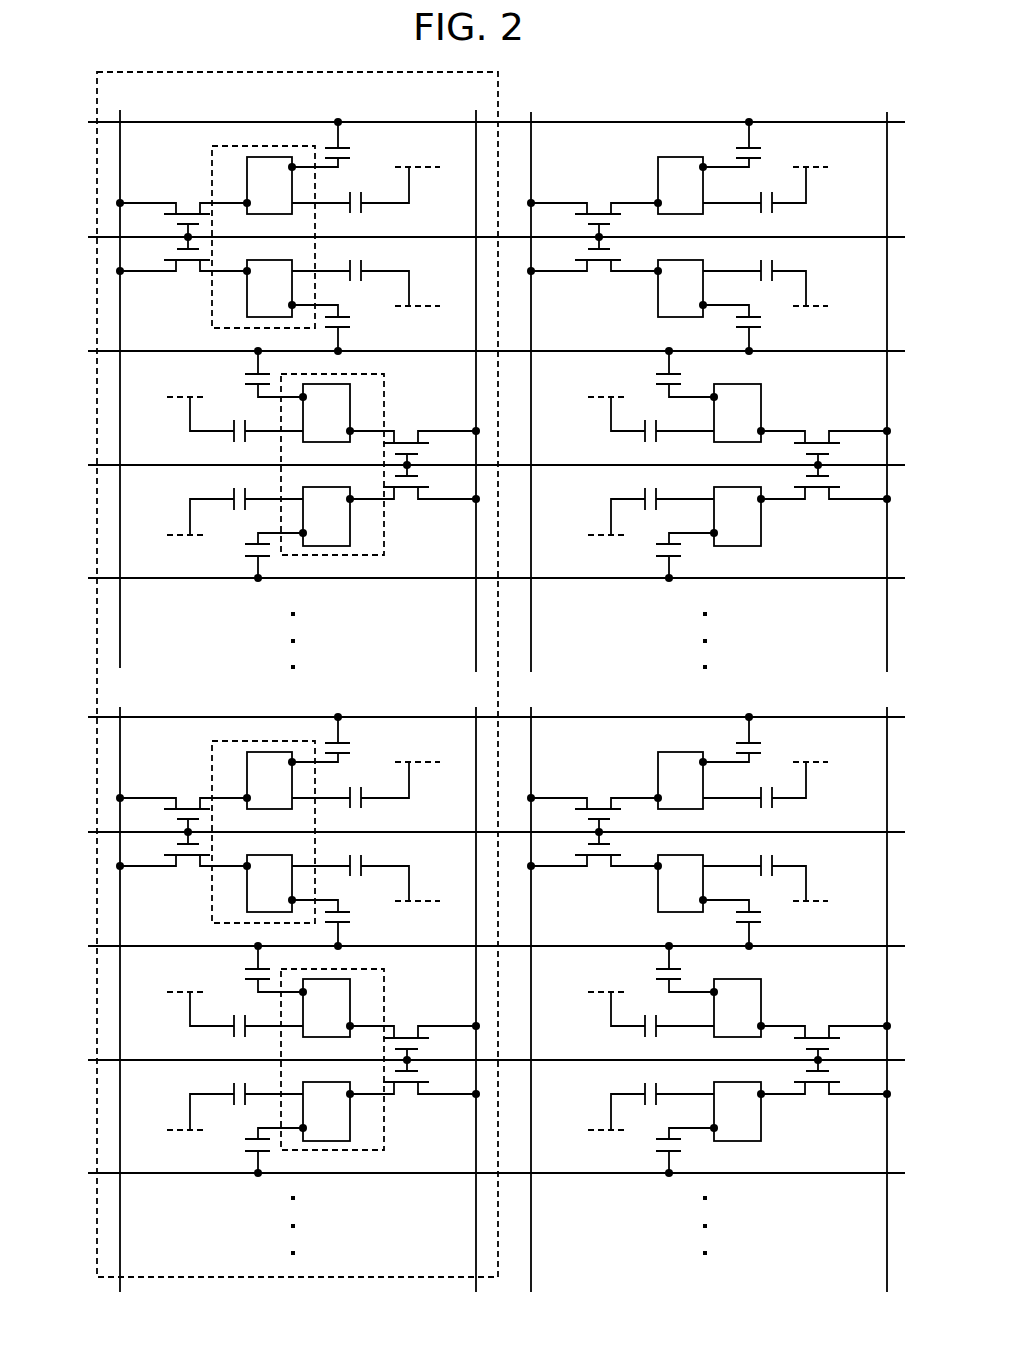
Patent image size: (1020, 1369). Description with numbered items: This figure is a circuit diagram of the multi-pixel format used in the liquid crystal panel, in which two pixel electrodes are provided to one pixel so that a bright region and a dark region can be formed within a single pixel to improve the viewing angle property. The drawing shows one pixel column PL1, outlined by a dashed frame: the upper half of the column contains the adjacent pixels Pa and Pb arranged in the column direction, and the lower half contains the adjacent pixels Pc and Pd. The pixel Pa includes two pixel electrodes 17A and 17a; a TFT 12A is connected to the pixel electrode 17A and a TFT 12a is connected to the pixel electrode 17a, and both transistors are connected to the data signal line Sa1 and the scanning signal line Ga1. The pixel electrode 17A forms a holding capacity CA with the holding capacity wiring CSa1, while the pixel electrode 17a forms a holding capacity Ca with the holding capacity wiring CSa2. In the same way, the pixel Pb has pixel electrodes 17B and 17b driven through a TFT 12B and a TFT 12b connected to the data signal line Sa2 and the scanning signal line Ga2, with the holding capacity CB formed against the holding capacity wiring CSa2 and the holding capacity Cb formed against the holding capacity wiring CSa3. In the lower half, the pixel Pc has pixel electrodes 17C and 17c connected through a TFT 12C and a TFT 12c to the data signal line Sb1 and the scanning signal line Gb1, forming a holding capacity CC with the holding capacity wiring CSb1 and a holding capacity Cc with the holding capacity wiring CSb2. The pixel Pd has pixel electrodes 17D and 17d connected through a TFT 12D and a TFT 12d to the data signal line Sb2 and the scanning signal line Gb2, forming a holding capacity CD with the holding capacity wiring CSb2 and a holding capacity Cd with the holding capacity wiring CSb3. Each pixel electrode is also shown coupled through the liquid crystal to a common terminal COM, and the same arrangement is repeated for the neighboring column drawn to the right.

The pixel column PL1 is at (297, 674).
The data signal line Sa1 is at (121, 377).
The data signal line Sa2 is at (476, 379).
The data signal line Sb1 is at (121, 984).
The data signal line Sb2 is at (476, 984).
The holding capacity wiring CSa1 is at (463, 124).
The holding capacity wiring CSa2 is at (463, 353).
The holding capacity wiring CSa3 is at (463, 580).
The holding capacity wiring CSb1 is at (463, 719).
The holding capacity wiring CSb2 is at (463, 948).
The holding capacity wiring CSb3 is at (463, 1175).
The scanning signal line Ga1 is at (470, 239).
The scanning signal line Ga2 is at (470, 467).
The scanning signal line Gb1 is at (470, 834).
The scanning signal line Gb2 is at (470, 1062).
The common electrode COM is at (497, 651).
The TFT 12A is at (183, 213).
The TFT 12a is at (183, 275).
The TFT 12B is at (413, 440).
The TFT 12b is at (413, 501).
The TFT 12C is at (183, 808).
The TFT 12c is at (183, 870).
The TFT 12D is at (413, 1035).
The TFT 12d is at (413, 1096).
The pixel electrode 17A is at (269, 185).
The pixel electrode 17a is at (269, 288).
The pixel electrode 17B is at (326, 413).
The pixel electrode 17b is at (326, 516).
The pixel electrode 17C is at (269, 780).
The pixel electrode 17c is at (269, 883).
The pixel electrode 17D is at (326, 1008).
The pixel electrode 17d is at (326, 1111).
The holding capacity CA is at (335, 144).
The holding capacity Ca is at (335, 328).
The holding capacity CB is at (260, 374).
The holding capacity Cb is at (261, 555).
The holding capacity CC is at (335, 739).
The holding capacity Cc is at (335, 923).
The holding capacity CD is at (260, 969).
The holding capacity Cd is at (261, 1150).
The pixel Pa is at (263, 237).
The pixel Pb is at (332, 464).
The pixel Pc is at (263, 832).
The pixel Pd is at (332, 1059).